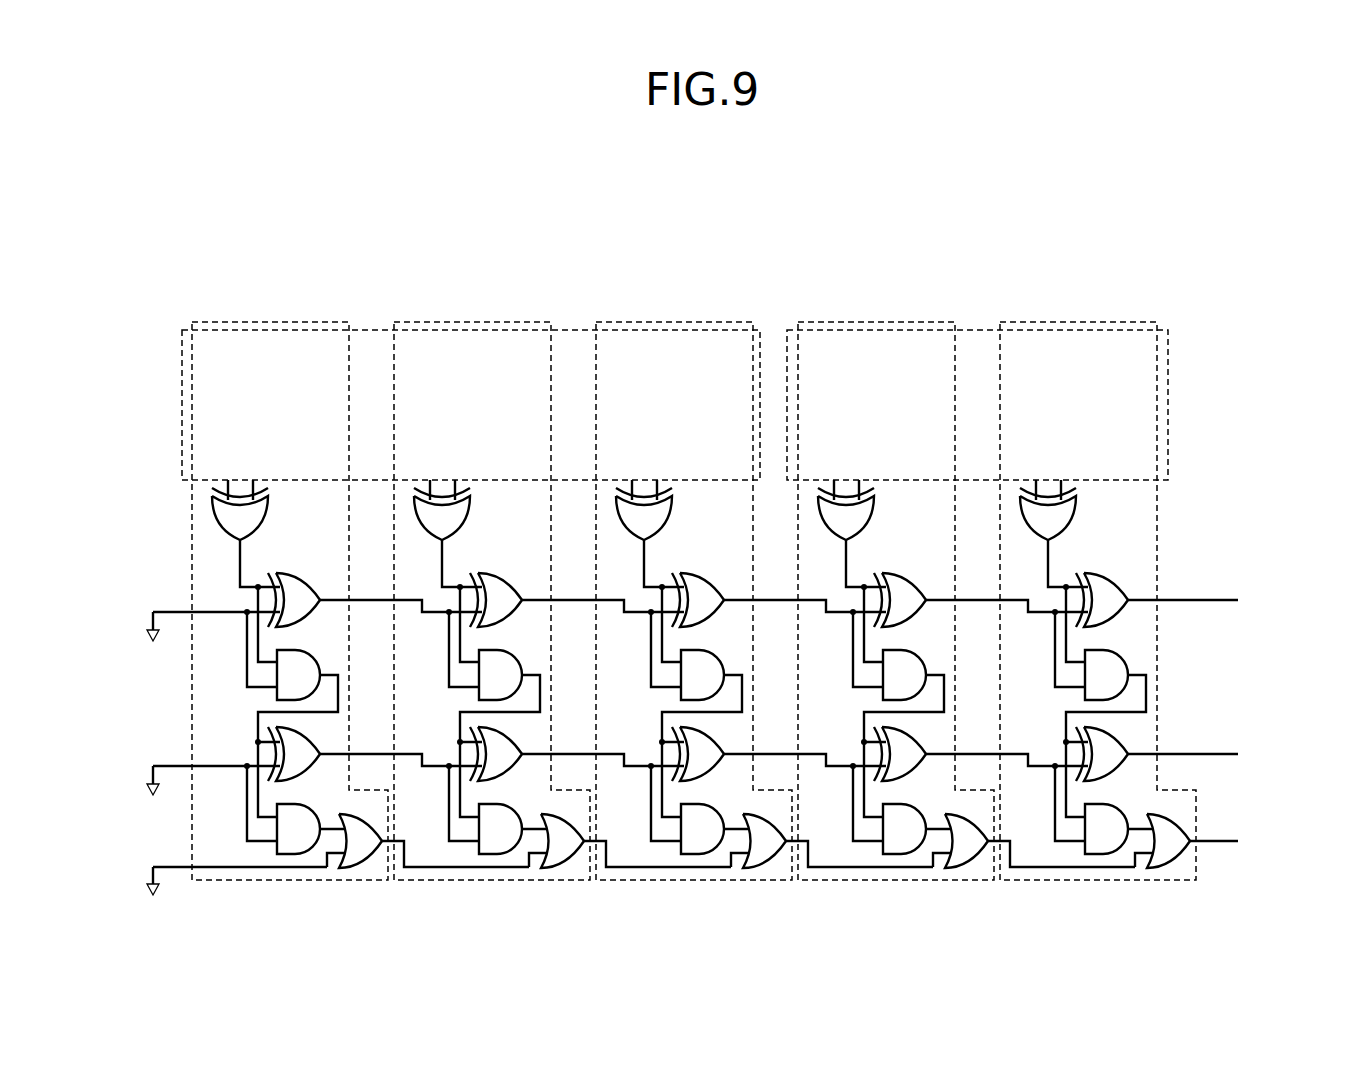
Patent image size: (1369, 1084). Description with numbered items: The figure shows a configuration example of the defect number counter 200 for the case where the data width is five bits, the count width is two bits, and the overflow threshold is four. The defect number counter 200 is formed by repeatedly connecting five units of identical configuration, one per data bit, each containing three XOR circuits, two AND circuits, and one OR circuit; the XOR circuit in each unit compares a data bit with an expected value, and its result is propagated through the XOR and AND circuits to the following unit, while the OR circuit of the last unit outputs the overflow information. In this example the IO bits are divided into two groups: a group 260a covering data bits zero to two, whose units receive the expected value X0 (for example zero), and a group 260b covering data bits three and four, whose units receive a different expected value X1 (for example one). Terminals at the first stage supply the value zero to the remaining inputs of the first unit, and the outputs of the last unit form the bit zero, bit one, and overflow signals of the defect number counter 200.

The defect number counter 200 is at (1048, 208).
The group 260a is at (760, 292).
The group 260b is at (1168, 292).